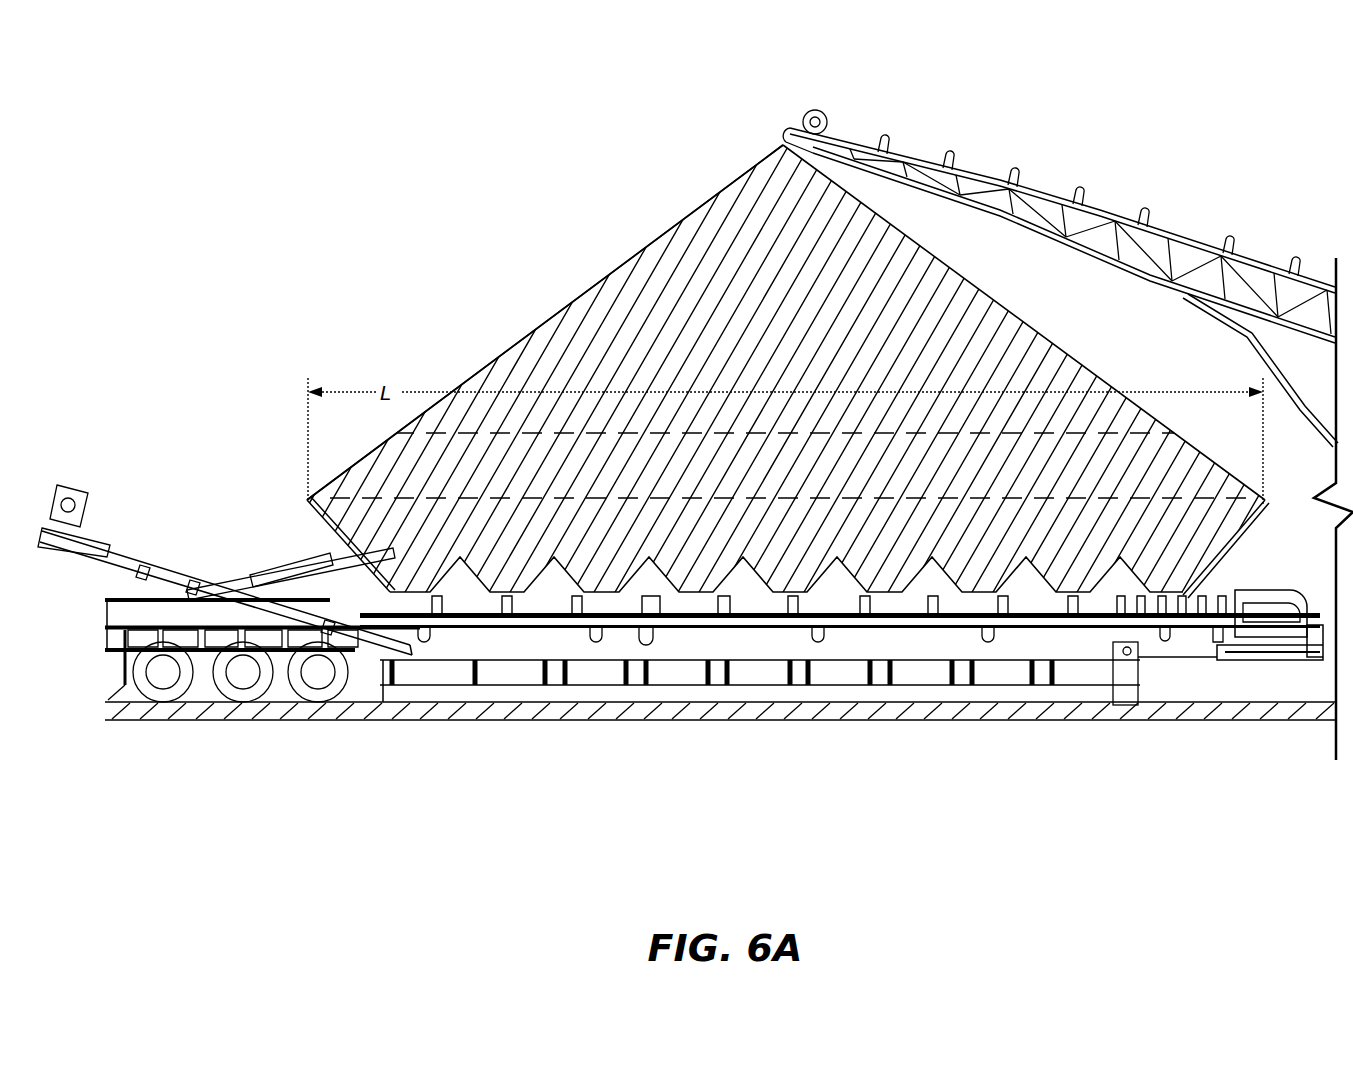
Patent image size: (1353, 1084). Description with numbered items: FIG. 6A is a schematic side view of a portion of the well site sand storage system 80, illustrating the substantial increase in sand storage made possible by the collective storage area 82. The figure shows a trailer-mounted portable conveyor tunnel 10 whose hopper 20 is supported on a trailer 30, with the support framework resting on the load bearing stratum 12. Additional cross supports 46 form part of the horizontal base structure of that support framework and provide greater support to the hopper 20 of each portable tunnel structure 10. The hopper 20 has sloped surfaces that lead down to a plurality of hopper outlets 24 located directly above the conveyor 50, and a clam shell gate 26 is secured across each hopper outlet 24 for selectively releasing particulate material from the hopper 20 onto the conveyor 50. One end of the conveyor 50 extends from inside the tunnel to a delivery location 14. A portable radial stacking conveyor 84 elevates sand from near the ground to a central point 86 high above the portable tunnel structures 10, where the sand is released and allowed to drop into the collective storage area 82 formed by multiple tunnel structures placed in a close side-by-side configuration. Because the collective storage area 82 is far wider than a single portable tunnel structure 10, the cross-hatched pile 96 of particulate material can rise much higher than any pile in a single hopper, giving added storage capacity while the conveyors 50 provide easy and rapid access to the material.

The trailer-mounted portable conveyor tunnel 10 is at (199, 459).
The load bearing stratum 12 is at (1192, 712).
The delivery location 14 is at (50, 550).
The hopper 20 is at (312, 522).
The hopper outlet 24 is at (740, 570).
The clam shell gate 26 is at (968, 565).
The trailer 30 is at (765, 643).
The cross supports 46 is at (503, 693).
The conveyor 50 is at (160, 563).
The well site sand storage system 80 is at (513, 180).
The collective storage area 82 is at (509, 266).
The portable radial stacking conveyor 84 is at (1040, 186).
The central point 86 is at (777, 131).
The pile 96 is at (792, 340).